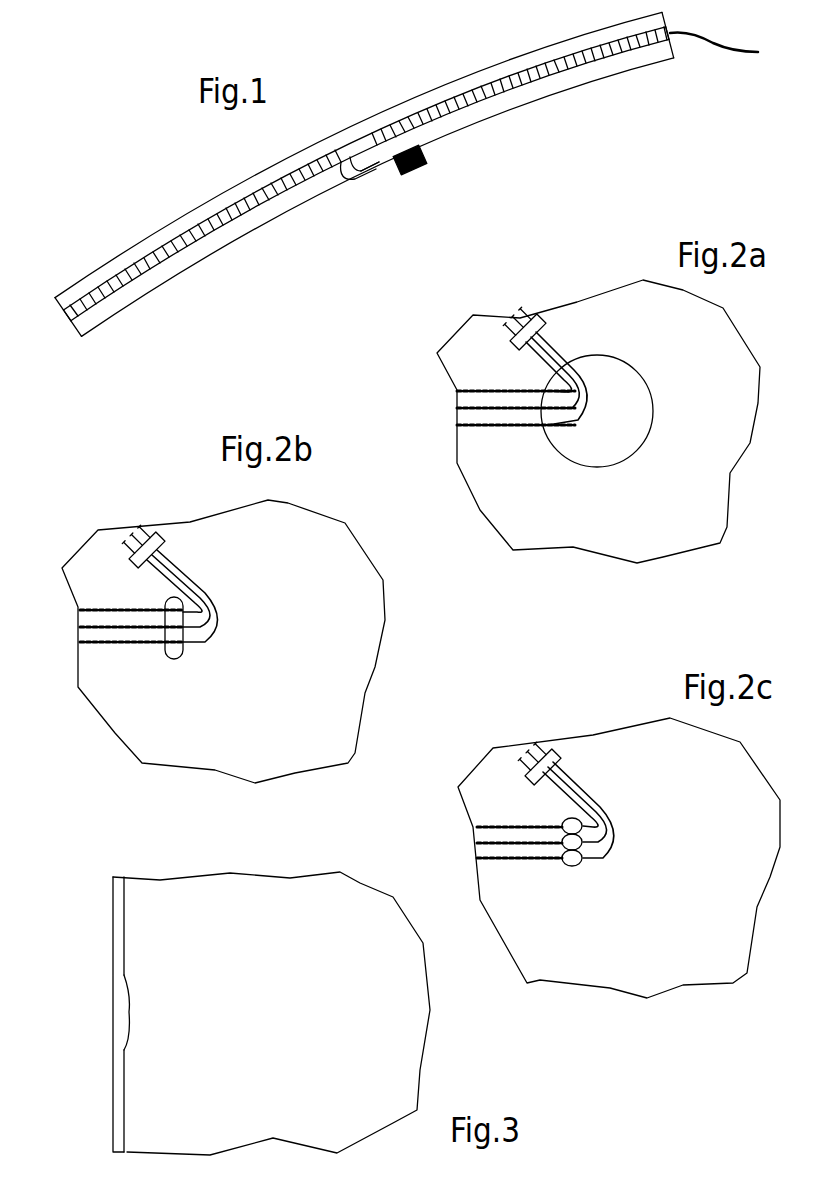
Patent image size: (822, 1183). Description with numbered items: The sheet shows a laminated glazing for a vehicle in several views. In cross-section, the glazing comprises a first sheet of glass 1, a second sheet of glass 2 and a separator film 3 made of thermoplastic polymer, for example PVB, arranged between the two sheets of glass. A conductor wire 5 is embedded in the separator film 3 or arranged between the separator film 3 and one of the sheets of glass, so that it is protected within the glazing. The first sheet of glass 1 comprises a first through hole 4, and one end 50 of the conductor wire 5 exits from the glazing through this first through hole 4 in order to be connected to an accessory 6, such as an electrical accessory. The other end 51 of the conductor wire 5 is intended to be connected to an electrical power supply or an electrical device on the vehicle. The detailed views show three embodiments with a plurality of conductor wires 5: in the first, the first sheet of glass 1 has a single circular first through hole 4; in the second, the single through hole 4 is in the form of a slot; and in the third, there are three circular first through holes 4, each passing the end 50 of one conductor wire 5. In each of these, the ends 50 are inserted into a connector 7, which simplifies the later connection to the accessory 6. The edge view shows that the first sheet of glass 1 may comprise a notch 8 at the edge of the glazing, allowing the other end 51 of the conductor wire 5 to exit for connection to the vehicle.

In FIG. 1, the first sheet of glass 1 is at (512, 106).
In FIG. 2A, the first sheet of glass 1 is at (643, 297).
In FIG. 2B, the first sheet of glass 1 is at (368, 603).
In FIG. 2C, the first sheet of glass 1 is at (646, 722).
In FIG. 3, the first sheet of glass 1 is at (357, 897).
In FIG. 1, the second sheet of glass 2 is at (472, 72).
In FIG. 3, the second sheet of glass 2 is at (113, 907).
In FIG. 1, the separator film 3 is at (186, 215).
In FIG. 1, the first through hole 4 is at (333, 183).
In FIG. 2A, the first through hole 4 is at (598, 467).
In FIG. 2B, the first through hole 4 is at (178, 660).
In FIG. 2C, the first through hole 4 is at (585, 855).
In FIG. 1, the conductor wire 5 is at (596, 72).
In FIG. 2A, the conductor wire 5 is at (490, 426).
In FIG. 2B, the conductor wire 5 is at (131, 626).
In FIG. 2C, the conductor wire 5 is at (515, 860).
In FIG. 1, the accessory 6 is at (428, 170).
In FIG. 2A, the connector 7 is at (505, 348).
In FIG. 2B, the connector 7 is at (127, 565).
In FIG. 2C, the connector 7 is at (528, 782).
In FIG. 3, the notch 8 is at (127, 1022).
In FIG. 1, the end of the conductor wire 50 is at (380, 176).
In FIG. 2A, the end of the conductor wire 50 is at (568, 338).
In FIG. 2B, the end of the conductor wire 50 is at (180, 548).
In FIG. 2C, the end of the conductor wire 50 is at (586, 762).
In FIG. 1, the other end of the conductor wire 51 is at (728, 60).